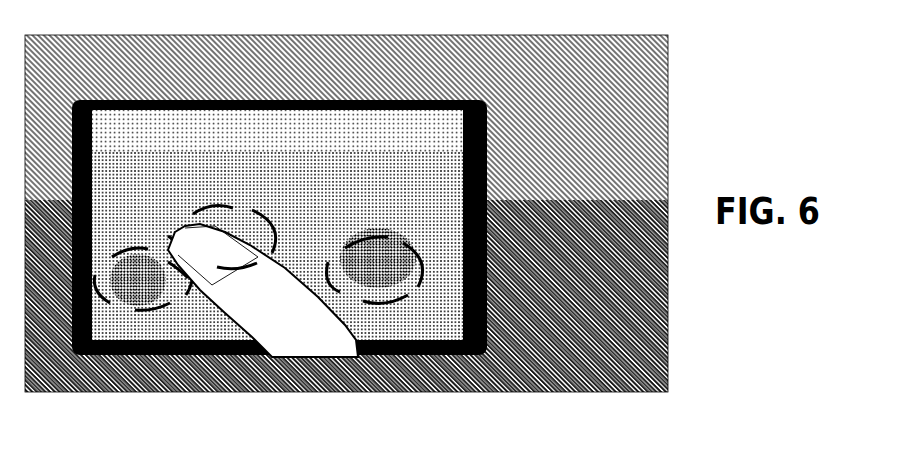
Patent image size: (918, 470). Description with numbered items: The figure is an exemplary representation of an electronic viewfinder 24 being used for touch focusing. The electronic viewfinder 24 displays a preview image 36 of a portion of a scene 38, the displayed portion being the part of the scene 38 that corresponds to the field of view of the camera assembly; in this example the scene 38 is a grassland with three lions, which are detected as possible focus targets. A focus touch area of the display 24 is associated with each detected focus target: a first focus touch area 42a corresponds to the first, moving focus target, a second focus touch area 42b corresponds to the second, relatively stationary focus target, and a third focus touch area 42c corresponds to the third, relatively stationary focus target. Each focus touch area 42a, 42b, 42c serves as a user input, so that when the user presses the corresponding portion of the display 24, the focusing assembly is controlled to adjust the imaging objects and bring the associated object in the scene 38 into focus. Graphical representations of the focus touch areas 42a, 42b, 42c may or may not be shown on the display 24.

The electronic viewfinder 24 is at (368, 323).
The preview image 36 is at (197, 134).
The scene 38 is at (583, 337).
The first focus touch area 42a is at (240, 207).
The second focus touch area 42b is at (138, 247).
The third focus touch area 42c is at (386, 230).